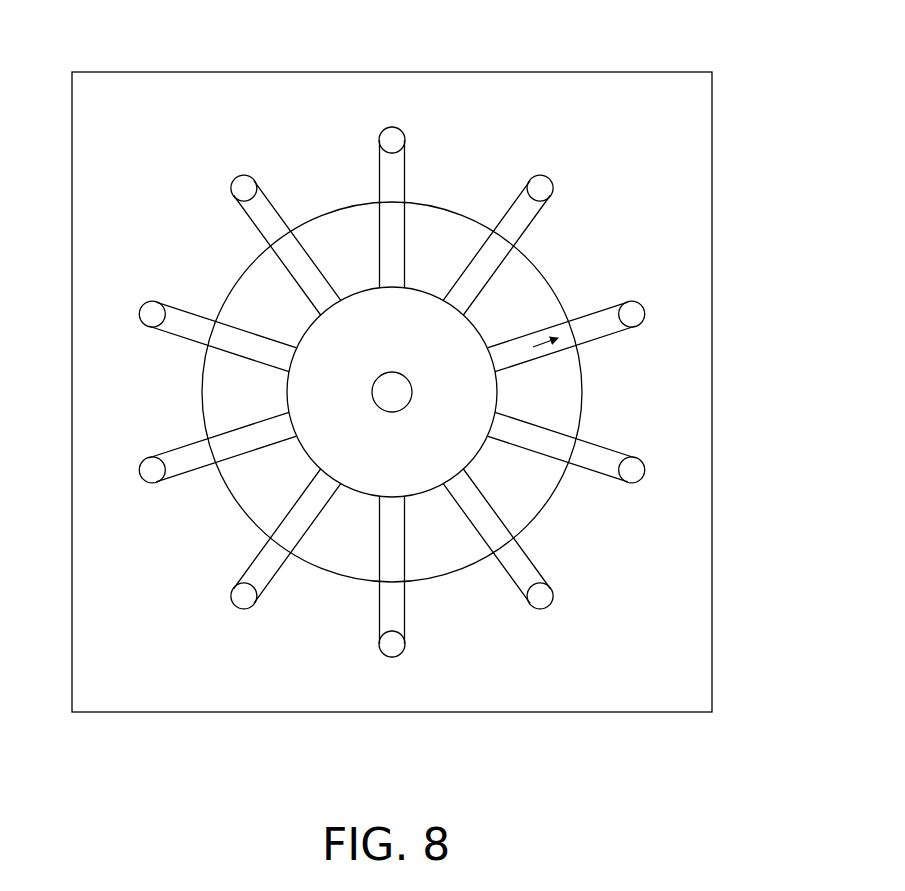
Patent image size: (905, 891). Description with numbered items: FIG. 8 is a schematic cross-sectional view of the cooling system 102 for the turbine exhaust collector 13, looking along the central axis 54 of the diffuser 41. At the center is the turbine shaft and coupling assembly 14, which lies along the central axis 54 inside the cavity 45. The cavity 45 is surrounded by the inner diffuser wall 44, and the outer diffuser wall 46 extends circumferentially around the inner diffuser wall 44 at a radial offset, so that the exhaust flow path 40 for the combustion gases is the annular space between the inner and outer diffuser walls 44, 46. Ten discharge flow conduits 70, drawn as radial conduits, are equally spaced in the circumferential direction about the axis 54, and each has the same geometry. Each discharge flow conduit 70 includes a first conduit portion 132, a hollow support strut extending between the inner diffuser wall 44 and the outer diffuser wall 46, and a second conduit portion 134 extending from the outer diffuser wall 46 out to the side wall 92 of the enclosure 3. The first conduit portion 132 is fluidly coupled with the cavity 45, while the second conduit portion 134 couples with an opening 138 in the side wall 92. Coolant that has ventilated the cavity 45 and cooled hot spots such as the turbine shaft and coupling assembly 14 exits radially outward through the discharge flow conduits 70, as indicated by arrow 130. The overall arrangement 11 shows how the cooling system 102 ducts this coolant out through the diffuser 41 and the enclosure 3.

The turbine exhaust collector 13 is at (187, 100).
The cooling system 102 is at (690, 158).
The enclosure 3 is at (120, 714).
The side wall 92 is at (260, 694).
The assembly 11 is at (579, 747).
The outer diffuser wall 46 is at (202, 378).
The diffuser 41 is at (239, 514).
The exhaust flow path 40 is at (259, 487).
The inner diffuser wall 44 is at (308, 452).
The cavity 45 is at (454, 396).
The turbine shaft and coupling assembly 14 is at (392, 370).
The central axis 54 is at (392, 412).
The discharge flow conduits 70 is at (538, 237).
The openings 138 is at (405, 137).
The coolant flow arrows 130 is at (544, 340).
The second conduit portion 134 is at (615, 338).
The first conduit portion 132 is at (525, 356).